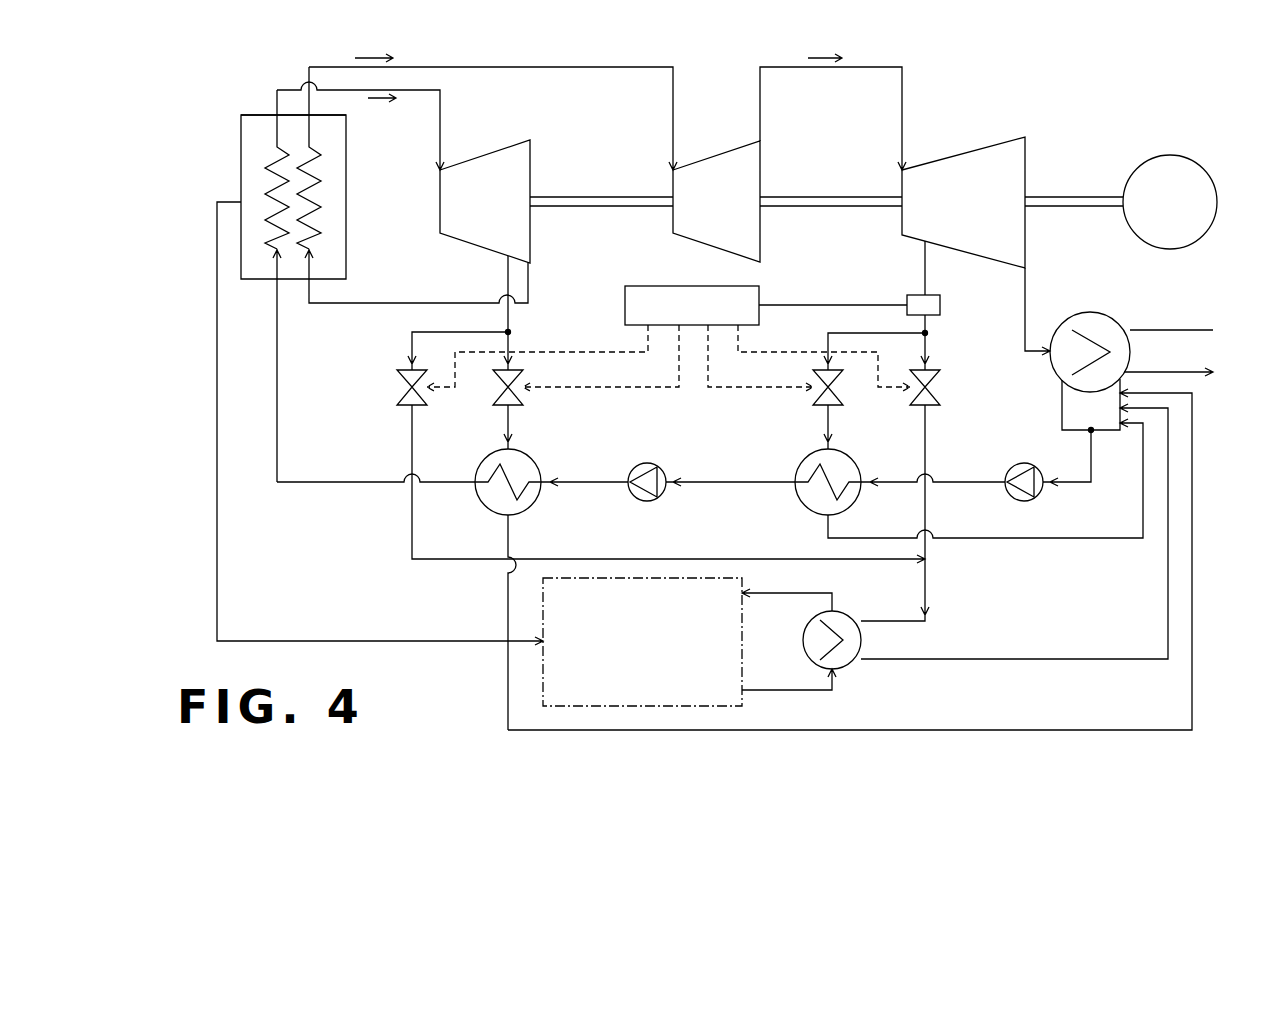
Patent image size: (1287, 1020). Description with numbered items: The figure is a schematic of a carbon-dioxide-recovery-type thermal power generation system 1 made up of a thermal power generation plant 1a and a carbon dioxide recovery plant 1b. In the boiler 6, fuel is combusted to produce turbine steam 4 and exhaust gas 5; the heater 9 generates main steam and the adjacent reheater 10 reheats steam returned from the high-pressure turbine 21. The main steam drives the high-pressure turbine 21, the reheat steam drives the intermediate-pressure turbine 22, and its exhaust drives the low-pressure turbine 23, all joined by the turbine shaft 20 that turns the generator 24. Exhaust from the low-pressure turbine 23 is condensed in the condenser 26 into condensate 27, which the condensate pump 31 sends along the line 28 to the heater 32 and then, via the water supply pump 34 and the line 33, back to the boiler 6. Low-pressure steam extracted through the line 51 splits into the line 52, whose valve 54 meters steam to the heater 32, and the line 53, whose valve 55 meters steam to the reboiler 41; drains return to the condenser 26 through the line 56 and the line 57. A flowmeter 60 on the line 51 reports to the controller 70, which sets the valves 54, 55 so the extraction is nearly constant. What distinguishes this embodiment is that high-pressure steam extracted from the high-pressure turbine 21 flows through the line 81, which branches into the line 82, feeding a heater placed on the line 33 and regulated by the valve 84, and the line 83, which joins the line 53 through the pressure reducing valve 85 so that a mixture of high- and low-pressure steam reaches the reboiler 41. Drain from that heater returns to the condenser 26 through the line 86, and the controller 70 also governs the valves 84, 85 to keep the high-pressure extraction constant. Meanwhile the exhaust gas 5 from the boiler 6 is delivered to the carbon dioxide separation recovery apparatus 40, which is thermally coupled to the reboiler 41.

The carbon-dioxide-recovery-type thermal power generation system 1 is at (1194, 72).
The thermal power generation plant 1a is at (210, 109).
The carbon dioxide recovery plant 1b is at (491, 708).
The turbine steam 4 is at (366, 60).
The exhaust gas 5 is at (209, 245).
The boiler 6 is at (346, 237).
The heater 9 is at (266, 160).
The reheater 10 is at (322, 160).
The turbine shaft 20 is at (592, 196).
The high-pressure steam turbine 21 is at (483, 156).
The intermediate-pressure steam turbine 22 is at (703, 156).
The low-pressure steam turbine 23 is at (951, 156).
The generator 24 is at (1201, 237).
The condenser 26 is at (1083, 312).
The condensate 27 is at (1104, 467).
The line 28 is at (968, 486).
The condensate pump 31 is at (1011, 465).
The heater 32 is at (805, 456).
The line 33 is at (590, 485).
The water supply pump 34 is at (640, 462).
The carbon dioxide separation recovery apparatus 40 is at (742, 617).
The reboiler 41 is at (845, 613).
The line 51 is at (924, 266).
The line 52 is at (845, 333).
The line 53 is at (931, 346).
The valve 54 is at (838, 400).
The valve 55 is at (942, 400).
The line 56 is at (1040, 540).
The line 57 is at (1010, 660).
The flowmeter 60 is at (942, 305).
The controller 70 is at (625, 303).
The line 81 is at (505, 283).
The line 82 is at (514, 432).
The line 83 is at (410, 345).
The valve 84 is at (502, 395).
The pressure reducing valve 85 is at (398, 390).
The line 86 is at (976, 731).